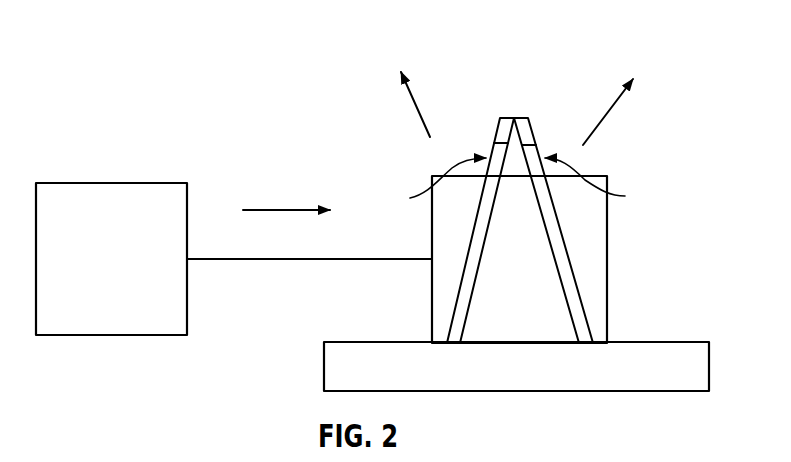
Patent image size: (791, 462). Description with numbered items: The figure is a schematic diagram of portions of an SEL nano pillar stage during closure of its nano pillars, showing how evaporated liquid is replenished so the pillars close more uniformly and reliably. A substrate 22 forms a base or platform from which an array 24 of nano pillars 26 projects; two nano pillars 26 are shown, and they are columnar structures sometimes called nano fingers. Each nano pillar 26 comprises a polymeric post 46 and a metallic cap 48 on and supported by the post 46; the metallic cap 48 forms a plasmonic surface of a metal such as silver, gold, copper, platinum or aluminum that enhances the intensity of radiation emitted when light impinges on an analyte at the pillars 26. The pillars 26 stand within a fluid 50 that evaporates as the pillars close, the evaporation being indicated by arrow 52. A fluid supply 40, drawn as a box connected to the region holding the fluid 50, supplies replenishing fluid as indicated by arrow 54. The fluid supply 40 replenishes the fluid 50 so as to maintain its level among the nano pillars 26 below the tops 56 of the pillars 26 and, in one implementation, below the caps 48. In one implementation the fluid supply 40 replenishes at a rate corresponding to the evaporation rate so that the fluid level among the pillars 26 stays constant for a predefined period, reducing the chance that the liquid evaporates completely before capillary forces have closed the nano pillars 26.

The substrate 22 is at (377, 342).
The array of nano pillars 24 is at (120, 62).
The nano pillar 26 is at (517, 185).
The fluid supply 40 is at (88, 183).
The polymeric post 46 is at (482, 250).
The metallic cap 48 is at (496, 138).
The fluid 50 is at (607, 260).
The arrow indicating evaporation 52 is at (417, 112).
The arrow indicating replenishing fluid 54 is at (287, 209).
The tops of nano pillars 56 is at (508, 117).